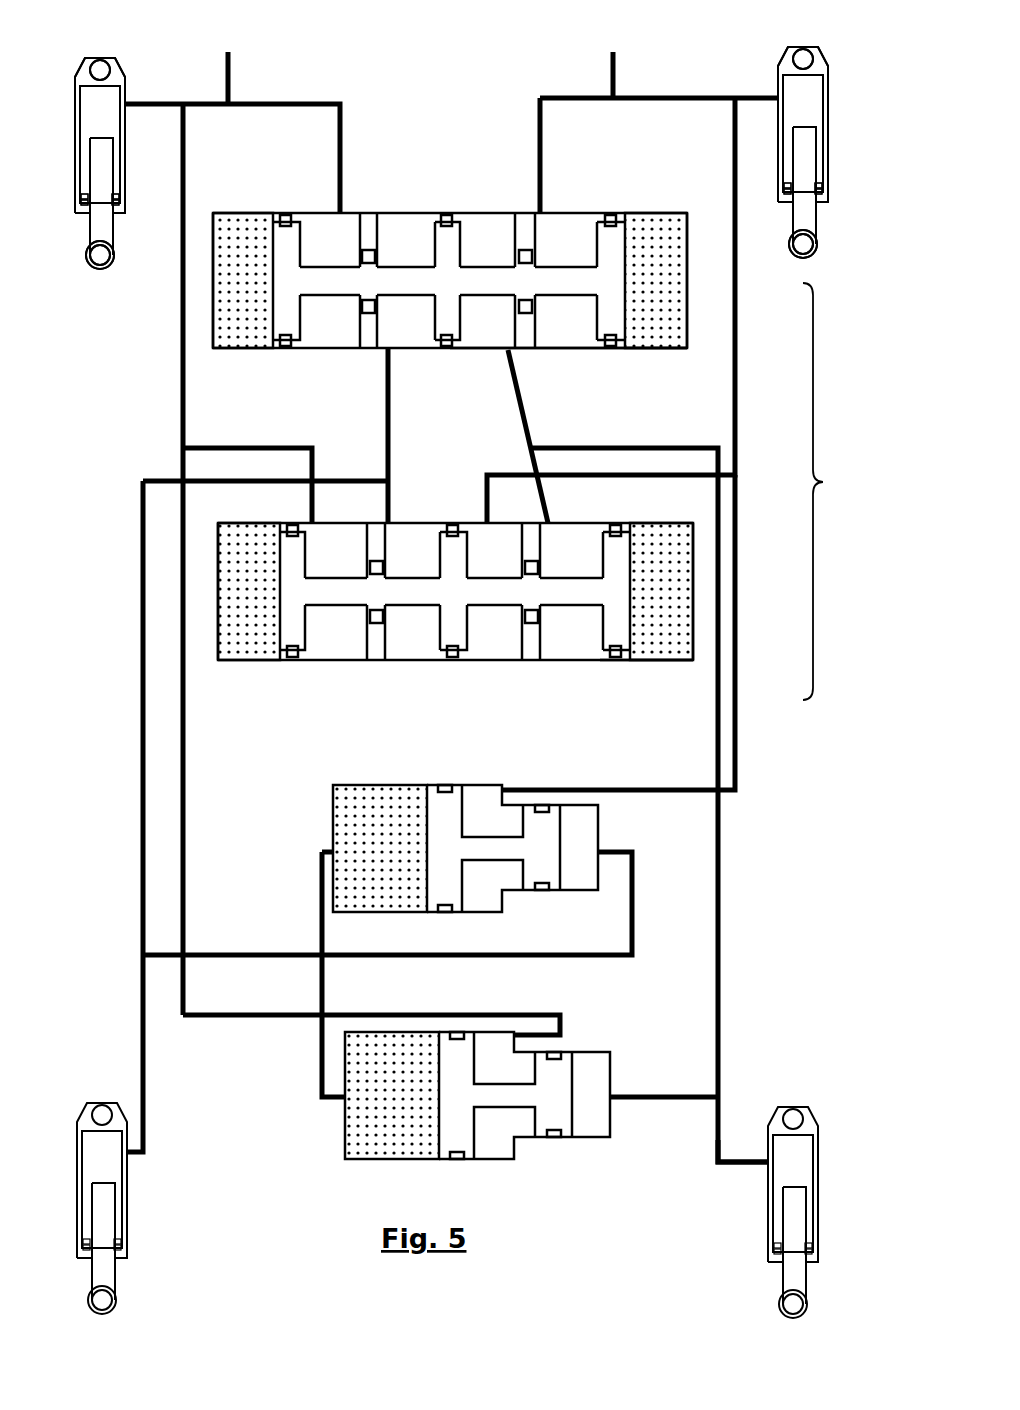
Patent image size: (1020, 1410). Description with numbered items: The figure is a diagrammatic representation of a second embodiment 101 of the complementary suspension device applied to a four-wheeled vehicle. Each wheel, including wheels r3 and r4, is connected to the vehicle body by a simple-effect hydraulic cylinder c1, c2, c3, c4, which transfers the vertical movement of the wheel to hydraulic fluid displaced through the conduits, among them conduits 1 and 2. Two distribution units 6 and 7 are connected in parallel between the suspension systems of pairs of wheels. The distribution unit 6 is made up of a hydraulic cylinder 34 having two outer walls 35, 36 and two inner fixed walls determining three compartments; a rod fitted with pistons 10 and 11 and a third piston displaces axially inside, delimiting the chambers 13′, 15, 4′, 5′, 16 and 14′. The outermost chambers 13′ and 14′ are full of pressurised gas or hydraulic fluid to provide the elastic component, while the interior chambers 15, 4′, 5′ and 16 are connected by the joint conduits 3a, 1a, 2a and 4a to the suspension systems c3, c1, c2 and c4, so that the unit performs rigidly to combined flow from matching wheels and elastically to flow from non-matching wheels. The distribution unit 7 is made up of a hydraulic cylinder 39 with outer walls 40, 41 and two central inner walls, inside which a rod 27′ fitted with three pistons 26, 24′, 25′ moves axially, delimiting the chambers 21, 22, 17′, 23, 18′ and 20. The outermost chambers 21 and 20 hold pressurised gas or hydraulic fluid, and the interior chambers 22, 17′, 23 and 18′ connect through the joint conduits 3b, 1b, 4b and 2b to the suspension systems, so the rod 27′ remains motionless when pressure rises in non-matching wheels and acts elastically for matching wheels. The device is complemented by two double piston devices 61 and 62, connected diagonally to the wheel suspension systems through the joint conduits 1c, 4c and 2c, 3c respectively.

The wheel r3 is at (100, 143).
The wheel r4 is at (803, 130).
The simple-effect hydraulic cylinder c1 is at (130, 1218).
The simple-effect hydraulic cylinder c2 is at (766, 1215).
The simple-effect hydraulic cylinder c3 is at (127, 90).
The simple-effect hydraulic cylinder c4 is at (783, 80).
The conduit 1 is at (147, 1108).
The joint conduit 1a is at (385, 377).
The joint conduit 1b is at (393, 490).
The joint conduit 1c is at (250, 950).
The conduit 2 is at (716, 1140).
The joint conduit 2a is at (531, 408).
The joint conduit 2b is at (547, 496).
The joint conduit 2c is at (652, 1092).
The joint conduit 3a is at (232, 517).
The joint conduit 3b is at (240, 446).
The joint conduit 3c is at (302, 1013).
The joint conduit 4a is at (659, 116).
The joint conduit 4b is at (578, 310).
The joint conduit 4c is at (662, 798).
The distribution unit 6 is at (439, 231).
The distribution unit 7 is at (434, 640).
The piston 10 is at (398, 277).
The piston 11 is at (438, 213).
The interior chamber 4′ is at (387, 230).
The interior chamber 5′ is at (499, 230).
The outermost chamber 13′ is at (231, 240).
The outermost chamber 14′ is at (648, 240).
The interior chamber 15 is at (312, 245).
The interior chamber 16 is at (563, 245).
The hydraulic cylinder 34 is at (572, 354).
The outer wall 35 is at (210, 300).
The outer wall 36 is at (688, 294).
The interior chamber 17′ is at (400, 643).
The interior chamber 18′ is at (560, 643).
The outermost chamber 20 is at (641, 643).
The outermost chamber 21 is at (242, 643).
The interior chamber 22 is at (333, 648).
The interior chamber 23 is at (487, 650).
The piston 24′ is at (443, 627).
The piston 25′ is at (607, 650).
The piston 26 is at (282, 627).
The rod 27′ is at (350, 597).
The hydraulic cylinder 39 is at (681, 682).
The outer wall 40 is at (216, 583).
The outer wall 41 is at (693, 580).
The double piston device 61 is at (328, 820).
The double piston device 62 is at (334, 1112).
The second embodiment of the complementary suspension device 101 is at (835, 491).